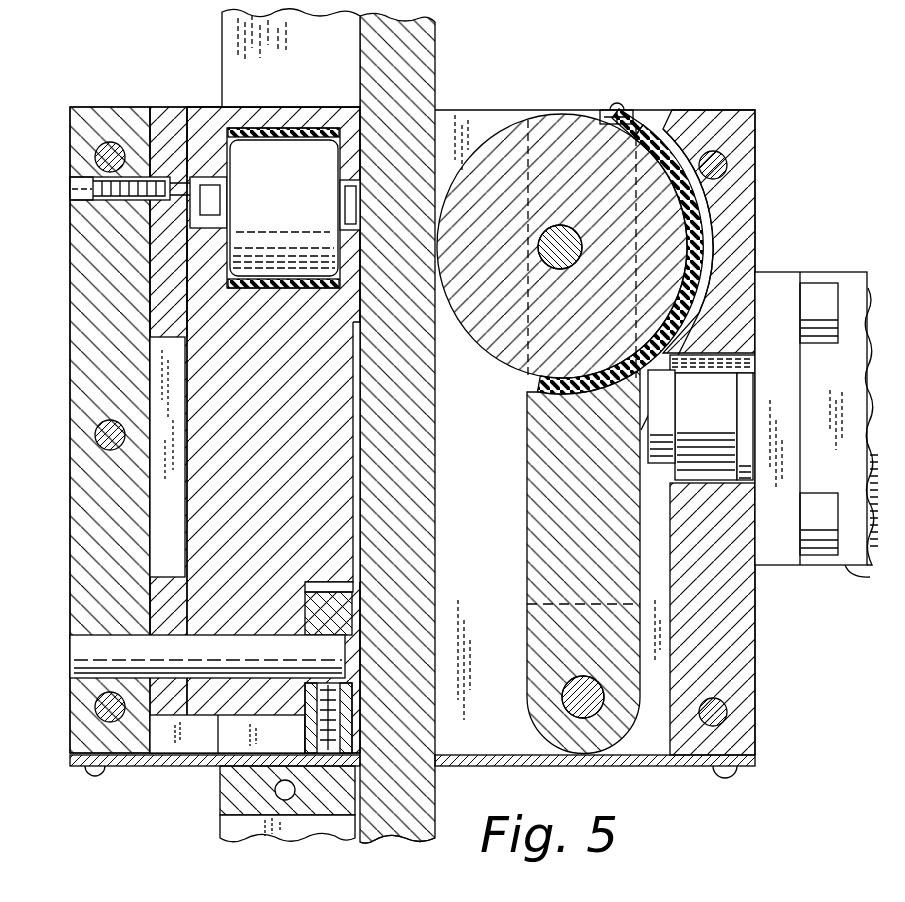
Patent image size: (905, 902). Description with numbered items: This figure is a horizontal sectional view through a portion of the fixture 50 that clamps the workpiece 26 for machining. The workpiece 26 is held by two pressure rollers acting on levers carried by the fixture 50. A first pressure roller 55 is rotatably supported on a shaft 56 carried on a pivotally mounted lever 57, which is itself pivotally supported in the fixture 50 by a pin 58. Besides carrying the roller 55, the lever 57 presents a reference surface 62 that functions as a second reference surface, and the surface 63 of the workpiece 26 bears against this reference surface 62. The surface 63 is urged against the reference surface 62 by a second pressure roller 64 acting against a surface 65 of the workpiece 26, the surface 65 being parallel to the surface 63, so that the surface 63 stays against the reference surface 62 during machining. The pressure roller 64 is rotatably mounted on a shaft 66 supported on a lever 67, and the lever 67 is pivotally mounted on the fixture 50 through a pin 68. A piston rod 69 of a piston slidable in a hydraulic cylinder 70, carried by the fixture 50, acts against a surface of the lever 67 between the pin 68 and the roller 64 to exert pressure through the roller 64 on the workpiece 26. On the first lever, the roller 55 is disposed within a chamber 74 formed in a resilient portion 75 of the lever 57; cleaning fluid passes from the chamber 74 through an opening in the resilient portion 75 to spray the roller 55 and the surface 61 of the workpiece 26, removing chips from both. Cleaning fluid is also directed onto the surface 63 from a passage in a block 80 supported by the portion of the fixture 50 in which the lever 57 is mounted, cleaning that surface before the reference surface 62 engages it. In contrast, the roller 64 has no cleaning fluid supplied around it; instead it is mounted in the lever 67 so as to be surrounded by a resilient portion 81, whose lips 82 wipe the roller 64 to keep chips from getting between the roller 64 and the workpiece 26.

The fixture 50 is at (70, 123).
The pressure roller 55 is at (296, 191).
The shaft 56 is at (357, 198).
The lever 57 is at (333, 106).
The pin 58 is at (74, 658).
The surface of workpiece 61 is at (222, 828).
The reference surface 62 is at (363, 136).
The surface of workpiece 63 is at (362, 36).
The pressure roller 64 is at (512, 122).
The surface of workpiece 65 is at (438, 56).
The shaft 66 is at (560, 258).
The lever 67 is at (525, 551).
The pin 68 is at (580, 698).
The piston rod 69 is at (658, 465).
The hydraulic cylinder 70 is at (855, 567).
The chamber 74 is at (260, 268).
The resilient portion 75 is at (265, 130).
The block 80 is at (220, 786).
The resilient portion 81 is at (655, 136).
The lips 82 is at (602, 112).
The workpiece 26 is at (400, 842).